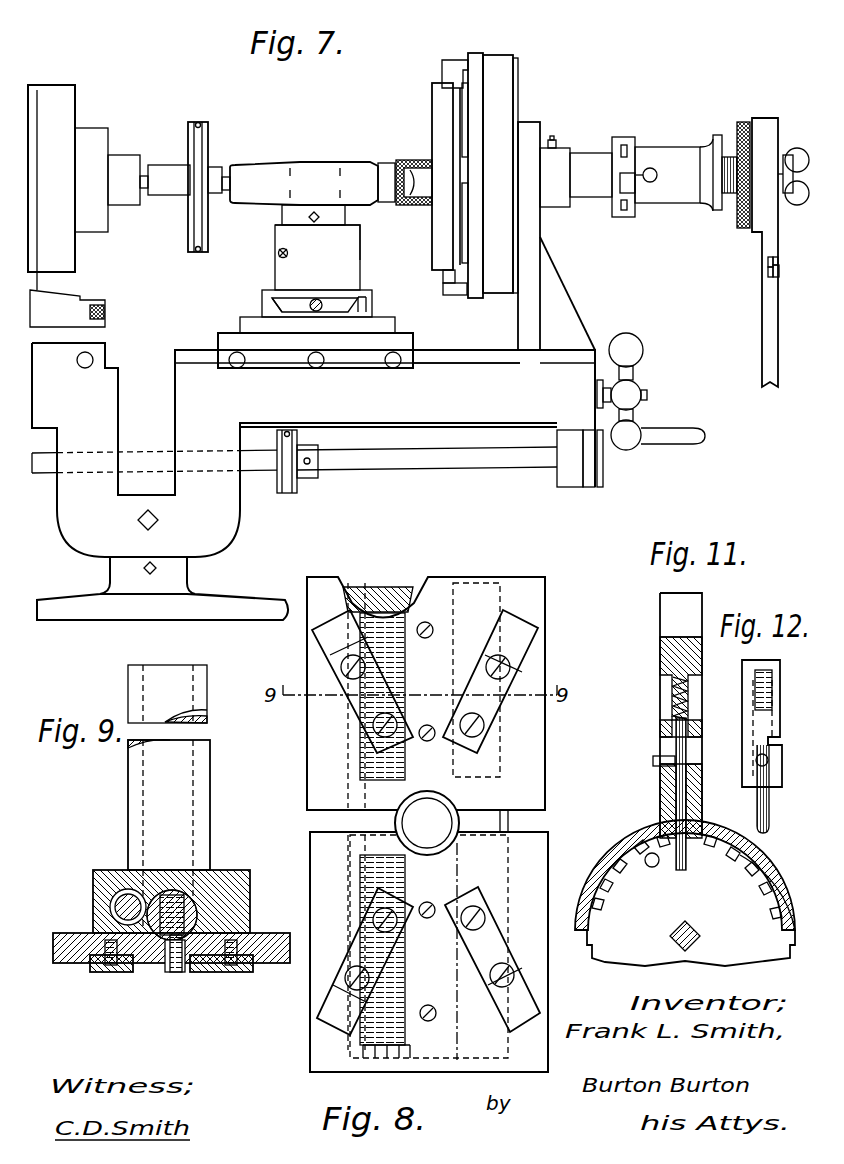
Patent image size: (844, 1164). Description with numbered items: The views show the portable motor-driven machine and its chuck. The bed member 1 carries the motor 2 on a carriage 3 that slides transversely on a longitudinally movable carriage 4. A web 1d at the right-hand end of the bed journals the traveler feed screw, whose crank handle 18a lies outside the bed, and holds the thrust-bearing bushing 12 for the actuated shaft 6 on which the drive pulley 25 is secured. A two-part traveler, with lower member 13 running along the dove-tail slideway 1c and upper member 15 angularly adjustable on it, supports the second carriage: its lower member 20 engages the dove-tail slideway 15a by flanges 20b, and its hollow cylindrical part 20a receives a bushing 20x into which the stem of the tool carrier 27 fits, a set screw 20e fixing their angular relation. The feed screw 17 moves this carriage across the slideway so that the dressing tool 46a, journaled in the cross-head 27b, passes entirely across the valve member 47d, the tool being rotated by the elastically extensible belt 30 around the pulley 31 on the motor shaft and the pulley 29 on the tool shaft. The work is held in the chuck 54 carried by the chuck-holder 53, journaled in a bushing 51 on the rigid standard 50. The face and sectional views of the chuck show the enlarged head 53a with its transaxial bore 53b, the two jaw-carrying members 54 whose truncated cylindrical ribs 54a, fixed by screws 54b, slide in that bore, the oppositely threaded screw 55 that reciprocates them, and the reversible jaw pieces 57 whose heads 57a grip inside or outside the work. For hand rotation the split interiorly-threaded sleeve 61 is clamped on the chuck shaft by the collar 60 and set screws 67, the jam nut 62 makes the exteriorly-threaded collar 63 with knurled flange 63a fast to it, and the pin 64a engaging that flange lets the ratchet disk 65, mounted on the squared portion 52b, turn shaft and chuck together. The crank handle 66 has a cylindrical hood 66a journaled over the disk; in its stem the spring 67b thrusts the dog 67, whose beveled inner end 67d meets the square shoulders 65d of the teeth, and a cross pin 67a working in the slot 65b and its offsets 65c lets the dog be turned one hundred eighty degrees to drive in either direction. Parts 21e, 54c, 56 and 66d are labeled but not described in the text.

In FIG. 7, the bed member 1 is at (92, 524).
In FIG. 7, the dove-tail slideway 1c is at (490, 362).
In FIG. 7, the web 1d is at (575, 462).
In FIG. 7, the motor 2 is at (60, 104).
In FIG. 7, the carriage 3 is at (70, 300).
In FIG. 7, the longitudinally movable carriage 4 is at (58, 362).
In FIG. 7, the actuated shaft 6 is at (400, 470).
In FIG. 7, the bushing 12 is at (604, 478).
In FIG. 7, the lower traveler part 13 is at (338, 369).
In FIG. 7, the upper traveler member 15 is at (240, 326).
In FIG. 7, the dove-tail slideway 15a is at (293, 319).
In FIG. 7, the feed screw 17 is at (317, 299).
In FIG. 7, the crank handle 18a is at (640, 374).
In FIG. 7, the lower carriage part 20 is at (362, 289).
In FIG. 7, the hollow cylindrical part 20a is at (362, 241).
In FIG. 7, the dove-tail flanges 20b is at (262, 301).
In FIG. 7, the set screw 20e is at (278, 256).
In FIG. 7, the bushing 20x is at (282, 226).
In FIG. 7, the clamp plate 21e is at (290, 290).
In FIG. 7, the drive pulley 25 is at (288, 494).
In FIG. 7, the tool or work-holding member 27 is at (322, 193).
In FIG. 7, the cross-head 27b is at (345, 163).
In FIG. 7, the pulley 29 is at (192, 205).
In FIG. 7, the belt 30 is at (198, 236).
In FIG. 7, the pulley 31 is at (208, 139).
In FIG. 7, the grinding or dressing tool 46a is at (415, 160).
In FIG. 7, the valve member 47d is at (432, 110).
In FIG. 7, the rigid standard 50 is at (533, 309).
In FIG. 7, the bushing 51 is at (549, 140).
In FIG. 11, the squared portion 52b is at (694, 932).
In FIG. 7, the chuck shaft 53 is at (588, 153).
In FIG. 9, the chuck shaft 53 is at (208, 812).
In FIG. 7, the enlarged head 53a is at (509, 102).
In FIG. 8, the enlarged head 53a is at (408, 588).
In FIG. 9, the enlarged head 53a is at (240, 880).
In FIG. 8, the transaxial bore 53b is at (452, 852).
In FIG. 9, the transaxial bore 53b is at (172, 893).
In FIG. 7, the chuck 54 is at (478, 95).
In FIG. 8, the chuck 54 is at (540, 836).
In FIG. 9, the chuck 54 is at (262, 935).
In FIG. 7, the rib 54a is at (495, 53).
In FIG. 9, the rib 54a is at (185, 950).
In FIG. 8, the screws 54b is at (426, 640).
In FIG. 9, the screws 54b is at (166, 966).
In FIG. 9, the bushing 54c is at (130, 890).
In FIG. 8, the screw 55 is at (372, 587).
In FIG. 9, the screw 55 is at (120, 906).
In FIG. 7, the block 56 is at (561, 147).
In FIG. 7, the jaw pieces 57 is at (469, 139).
In FIG. 8, the jaw pieces 57 is at (410, 740).
In FIG. 9, the jaw pieces 57 is at (96, 974).
In FIG. 7, the jaw heads 57a is at (452, 62).
In FIG. 8, the jaw heads 57a is at (322, 638).
In FIG. 7, the collar 60 is at (627, 137).
In FIG. 7, the interiorly-threaded sleeve 61 is at (663, 200).
In FIG. 7, the jam nut 62 is at (716, 211).
In FIG. 7, the exteriorly-threaded collar 63 is at (712, 139).
In FIG. 7, the knurled flange 63a is at (742, 122).
In FIG. 7, the pin 64a is at (737, 124).
In FIG. 11, the ratchet disk 65 is at (643, 942).
In FIG. 7, the slot 65b is at (779, 273).
In FIG. 12, the slot 65b is at (772, 740).
In FIG. 7, the longitudinal offsets 65c is at (768, 261).
In FIG. 11, the longitudinal offsets 65c is at (755, 757).
In FIG. 11, the square shoulders 65d is at (632, 860).
In FIG. 7, the crank handle 66 is at (765, 319).
In FIG. 11, the crank handle 66 is at (693, 602).
In FIG. 12, the crank handle 66 is at (780, 687).
In FIG. 7, the cylindrical hood 66a is at (800, 148).
In FIG. 11, the cylindrical hood 66a is at (760, 878).
In FIG. 7, the knob stem 66d is at (791, 154).
In FIG. 7, the dog 67 is at (629, 148).
In FIG. 7, the cross pin 67a is at (778, 260).
In FIG. 11, the cross pin 67a is at (653, 762).
In FIG. 12, the cross pin 67a is at (756, 761).
In FIG. 11, the spring 67b is at (672, 700).
In FIG. 7, the inner end of dog 67d is at (768, 273).
In FIG. 11, the inner end of dog 67d is at (676, 800).
In FIG. 12, the inner end of dog 67d is at (758, 807).